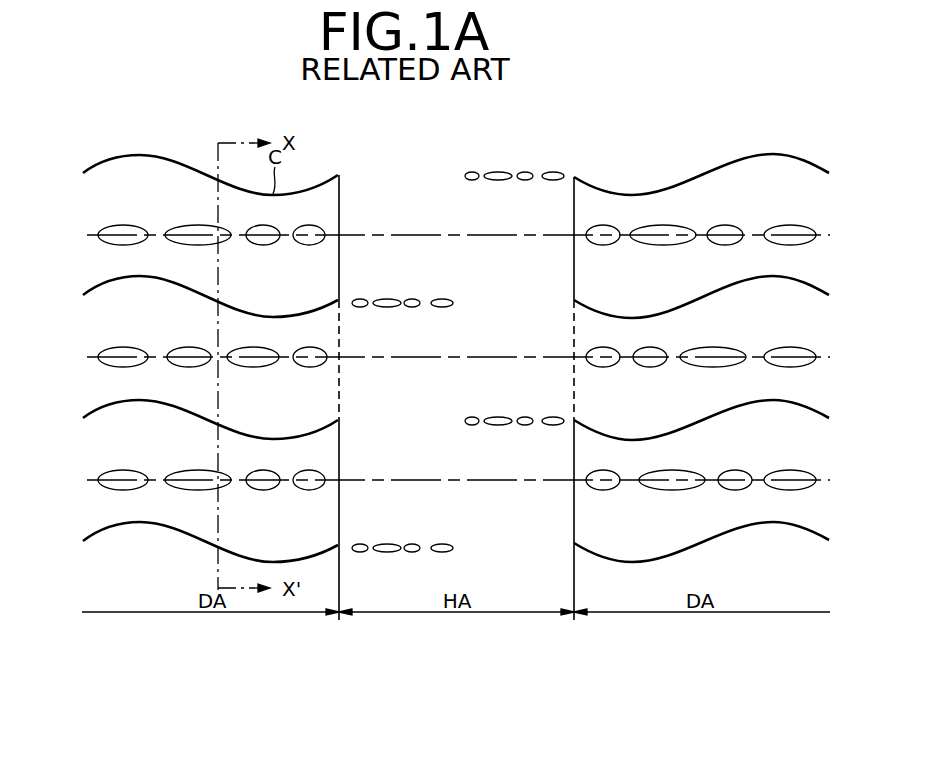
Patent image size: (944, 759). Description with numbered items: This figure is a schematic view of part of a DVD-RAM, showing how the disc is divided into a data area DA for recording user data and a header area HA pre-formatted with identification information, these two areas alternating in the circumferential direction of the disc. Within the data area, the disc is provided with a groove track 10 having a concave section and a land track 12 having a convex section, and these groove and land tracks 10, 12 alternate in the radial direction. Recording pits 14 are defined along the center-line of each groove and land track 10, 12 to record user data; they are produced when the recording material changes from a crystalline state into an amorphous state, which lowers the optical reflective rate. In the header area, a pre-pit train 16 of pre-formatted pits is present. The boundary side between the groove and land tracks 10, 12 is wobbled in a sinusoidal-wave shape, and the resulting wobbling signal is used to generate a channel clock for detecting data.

The groove track 10 is at (462, 357).
The land track 12 is at (462, 357).
The recording pits 14 is at (310, 367).
The pre-pit train 16 is at (494, 174).